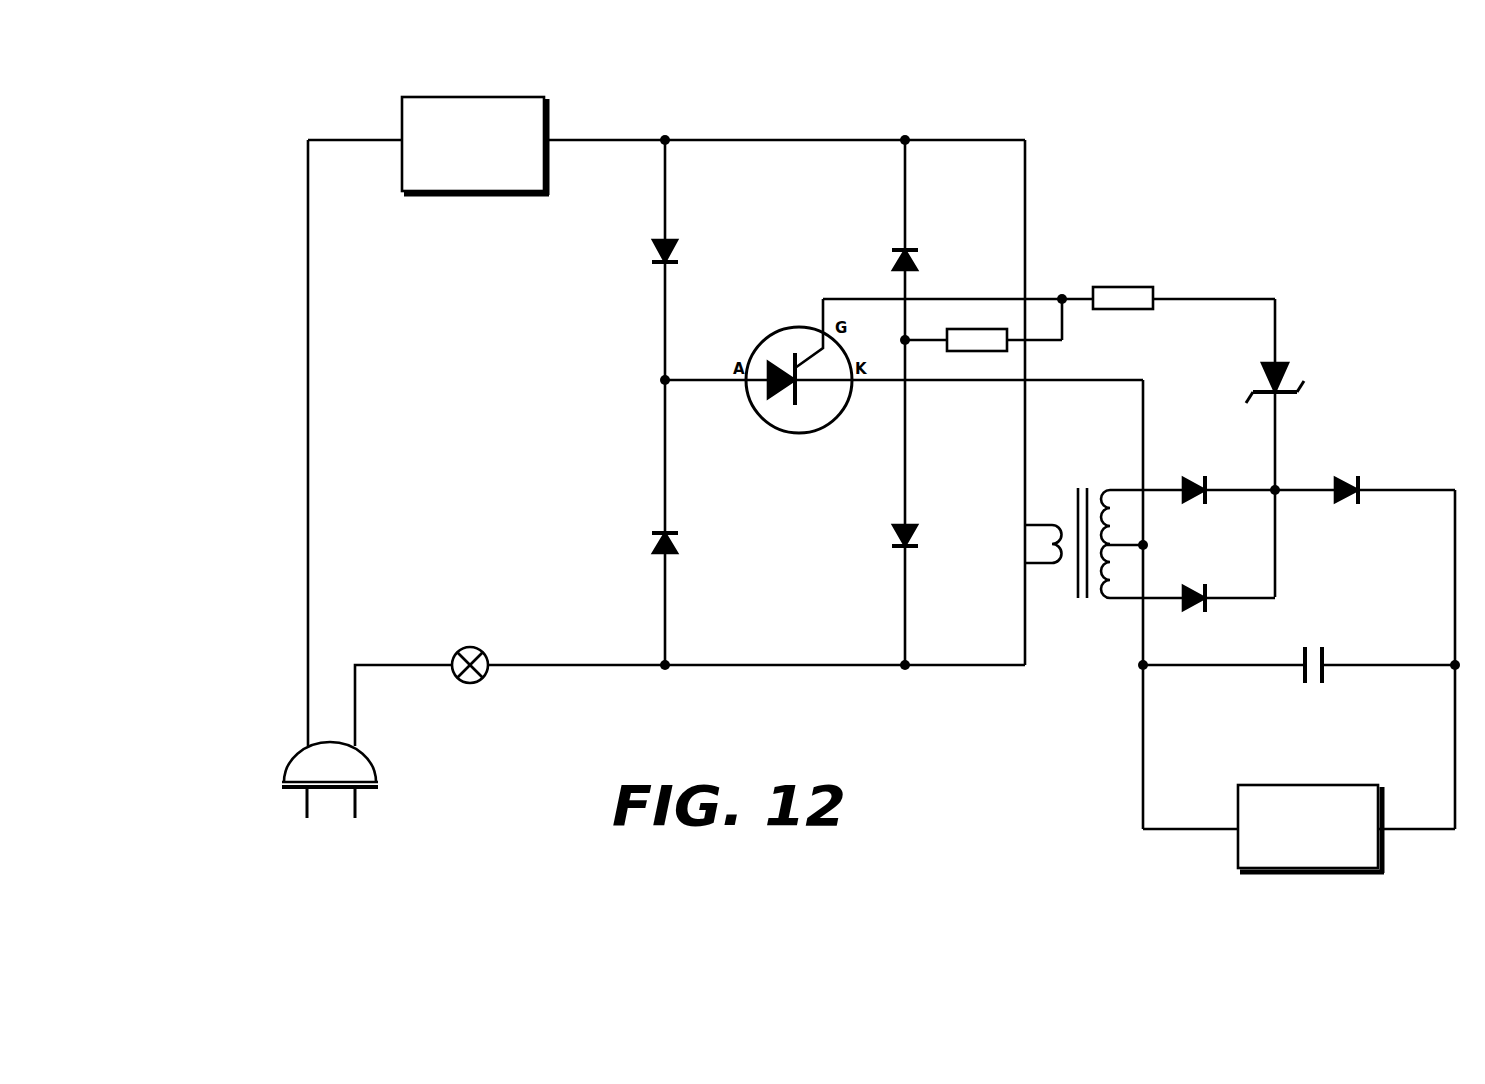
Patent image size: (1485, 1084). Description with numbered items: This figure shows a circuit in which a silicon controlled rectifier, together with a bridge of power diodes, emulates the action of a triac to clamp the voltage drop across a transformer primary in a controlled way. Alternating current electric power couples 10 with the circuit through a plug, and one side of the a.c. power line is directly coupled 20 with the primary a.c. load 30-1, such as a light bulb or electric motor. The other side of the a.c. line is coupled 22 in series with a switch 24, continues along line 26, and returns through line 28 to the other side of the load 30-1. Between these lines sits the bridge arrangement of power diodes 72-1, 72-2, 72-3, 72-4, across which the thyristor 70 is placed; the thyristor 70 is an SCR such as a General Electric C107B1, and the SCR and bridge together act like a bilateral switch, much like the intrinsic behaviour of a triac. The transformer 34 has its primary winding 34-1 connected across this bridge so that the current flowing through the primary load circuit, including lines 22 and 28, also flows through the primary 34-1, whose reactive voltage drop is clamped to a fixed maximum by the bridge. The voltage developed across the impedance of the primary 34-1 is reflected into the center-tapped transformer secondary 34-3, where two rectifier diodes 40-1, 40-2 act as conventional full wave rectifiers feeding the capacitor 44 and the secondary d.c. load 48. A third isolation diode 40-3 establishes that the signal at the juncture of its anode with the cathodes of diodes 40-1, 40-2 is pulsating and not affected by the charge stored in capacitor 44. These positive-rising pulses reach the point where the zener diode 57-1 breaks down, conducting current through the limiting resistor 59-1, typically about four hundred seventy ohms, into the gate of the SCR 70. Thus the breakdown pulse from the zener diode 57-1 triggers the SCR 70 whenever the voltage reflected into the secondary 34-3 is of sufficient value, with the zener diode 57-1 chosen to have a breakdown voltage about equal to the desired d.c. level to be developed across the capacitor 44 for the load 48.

The alternating current electric power coupling 10 is at (285, 762).
The direct coupling 20 is at (305, 395).
The series coupling 22 is at (395, 662).
The switch 24 is at (489, 650).
The conductor 26 is at (607, 662).
The line 28 is at (763, 137).
The primary a.c. load 30-1 is at (553, 128).
The transformer 34 is at (1072, 507).
The primary winding 34-1 is at (1028, 543).
The transformer secondary 34-3 is at (1117, 562).
The rectifier diode 40-1 is at (1237, 440).
The rectifier diode 40-2 is at (1233, 559).
The isolation diode 40-3 is at (1374, 477).
The capacitor 44 is at (1336, 652).
The secondary d.c. load 48 is at (1368, 782).
The zener diode 57-1 is at (1323, 346).
The limiting resistor 59-1 is at (1139, 284).
The thyristor 70 is at (761, 345).
The power diode 72-1 is at (686, 253).
The power diode 72-2 is at (640, 538).
The power diode 72-3 is at (931, 253).
The power diode 72-4 is at (872, 540).